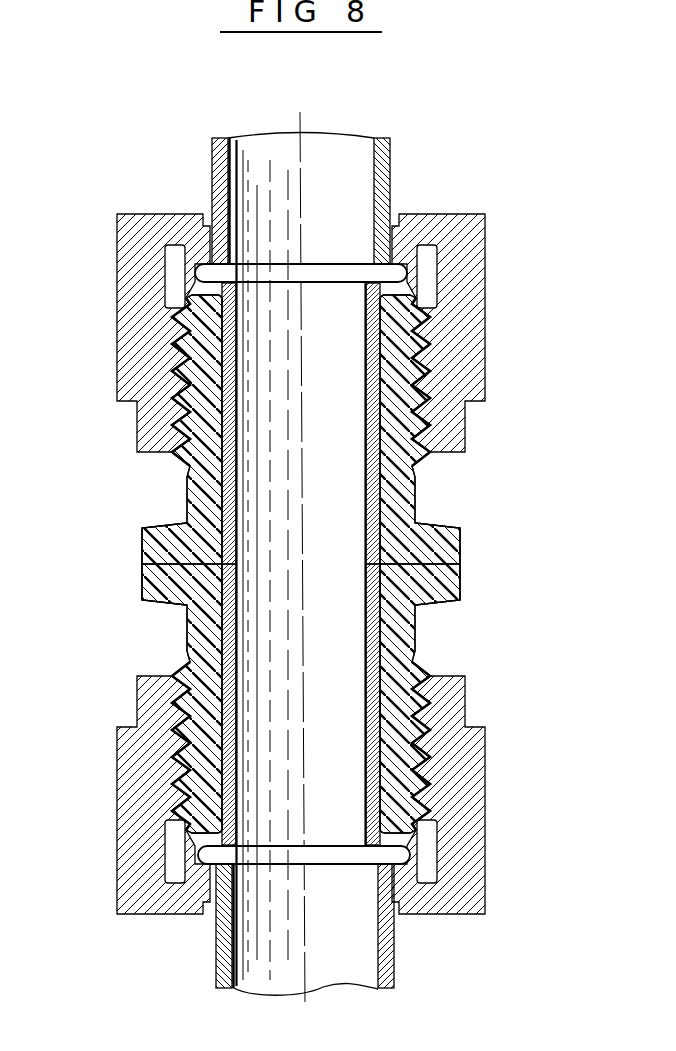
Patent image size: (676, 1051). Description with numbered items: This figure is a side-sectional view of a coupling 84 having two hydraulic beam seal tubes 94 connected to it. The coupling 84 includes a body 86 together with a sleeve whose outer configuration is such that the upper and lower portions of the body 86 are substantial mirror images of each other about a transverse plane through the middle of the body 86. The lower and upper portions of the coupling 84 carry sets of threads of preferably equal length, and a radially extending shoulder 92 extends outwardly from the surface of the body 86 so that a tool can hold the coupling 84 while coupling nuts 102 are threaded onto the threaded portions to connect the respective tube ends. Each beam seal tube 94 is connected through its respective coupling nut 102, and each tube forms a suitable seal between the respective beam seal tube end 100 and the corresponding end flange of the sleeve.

The coupling 84 is at (486, 566).
The body 86 is at (407, 481).
The radially extending shoulder 92 is at (142, 570).
The hydraulic beam seal tube 94 is at (389, 178).
The beam seal tube end 100 is at (417, 262).
The coupling nut 102 is at (117, 316).